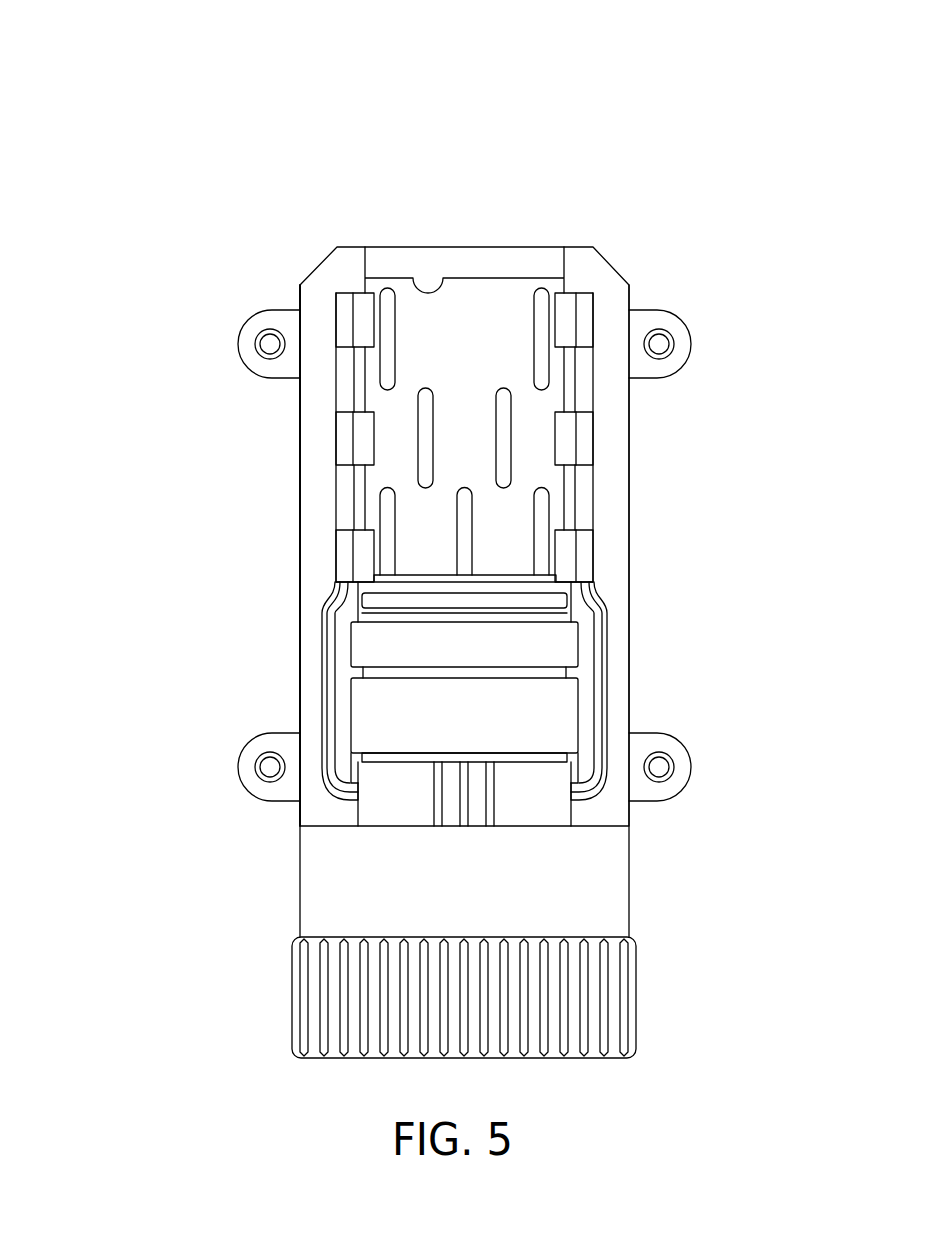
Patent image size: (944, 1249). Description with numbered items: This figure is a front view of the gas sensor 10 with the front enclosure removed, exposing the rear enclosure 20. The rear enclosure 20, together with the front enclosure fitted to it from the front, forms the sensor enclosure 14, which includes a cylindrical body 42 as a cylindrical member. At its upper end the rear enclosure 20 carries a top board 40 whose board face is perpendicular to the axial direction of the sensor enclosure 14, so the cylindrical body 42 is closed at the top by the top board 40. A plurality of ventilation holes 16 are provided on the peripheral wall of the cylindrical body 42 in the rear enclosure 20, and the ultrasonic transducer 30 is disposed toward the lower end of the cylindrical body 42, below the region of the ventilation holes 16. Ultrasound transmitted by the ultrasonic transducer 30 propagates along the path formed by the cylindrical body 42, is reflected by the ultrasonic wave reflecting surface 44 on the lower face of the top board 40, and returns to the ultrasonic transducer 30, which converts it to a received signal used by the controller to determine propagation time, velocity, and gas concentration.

The gas sensor 10 is at (300, 118).
The sensor enclosure 14 is at (630, 488).
The ventilation holes 16 is at (543, 338).
The rear enclosure 20 is at (313, 530).
The cylindrical body 42 is at (197, 555).
The ultrasonic transducer 30 is at (522, 705).
The top board 40 is at (435, 262).
The ultrasonic wave reflecting surface 44 is at (412, 282).